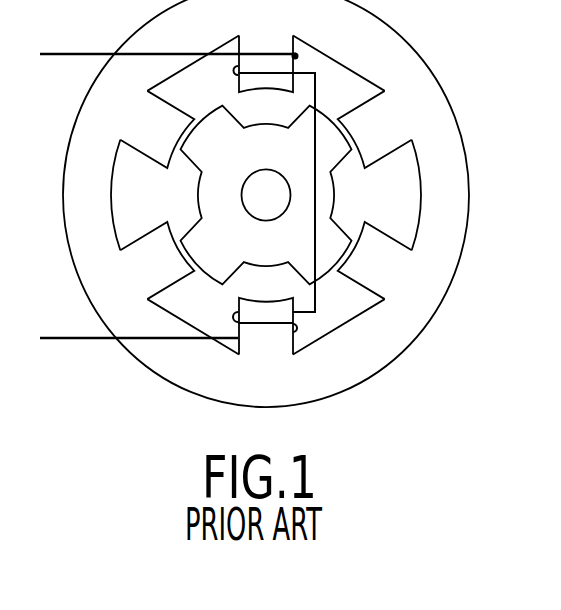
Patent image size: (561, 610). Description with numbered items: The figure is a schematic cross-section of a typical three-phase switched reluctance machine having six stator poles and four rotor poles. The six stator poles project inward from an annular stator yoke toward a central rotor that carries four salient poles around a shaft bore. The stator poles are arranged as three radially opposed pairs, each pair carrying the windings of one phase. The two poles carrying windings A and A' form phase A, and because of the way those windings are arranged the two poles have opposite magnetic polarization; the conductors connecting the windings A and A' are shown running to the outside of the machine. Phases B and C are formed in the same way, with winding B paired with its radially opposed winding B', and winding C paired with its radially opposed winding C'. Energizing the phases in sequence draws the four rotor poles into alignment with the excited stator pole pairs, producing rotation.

The winding A is at (266, 46).
The winding A' is at (266, 345).
The winding B is at (157, 129).
The winding B' is at (375, 260).
The winding C is at (157, 260).
The winding C' is at (375, 129).